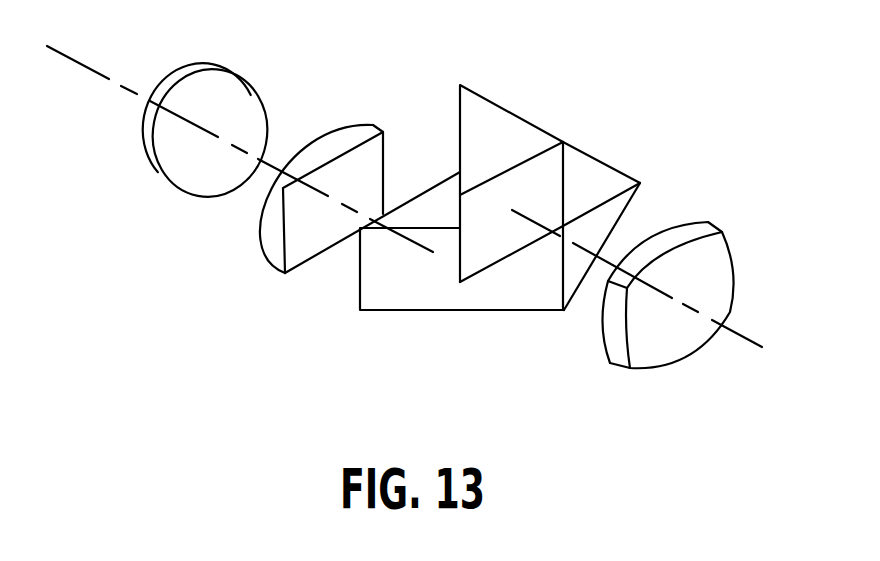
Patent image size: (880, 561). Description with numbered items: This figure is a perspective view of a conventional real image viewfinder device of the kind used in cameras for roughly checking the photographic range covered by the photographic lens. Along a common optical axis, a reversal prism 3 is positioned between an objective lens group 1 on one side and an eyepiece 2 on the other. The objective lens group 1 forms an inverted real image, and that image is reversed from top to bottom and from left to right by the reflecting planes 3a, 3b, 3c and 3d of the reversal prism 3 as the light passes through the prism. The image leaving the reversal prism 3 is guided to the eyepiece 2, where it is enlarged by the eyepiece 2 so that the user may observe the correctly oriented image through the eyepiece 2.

The objective lens group 1 is at (403, 123).
The eyepiece 2 is at (653, 340).
The reversal prism 3 is at (511, 201).
The reflecting plane 3a is at (412, 290).
The reflecting plane 3b is at (628, 207).
The reflecting plane 3c is at (578, 148).
The reflecting plane 3d is at (457, 112).